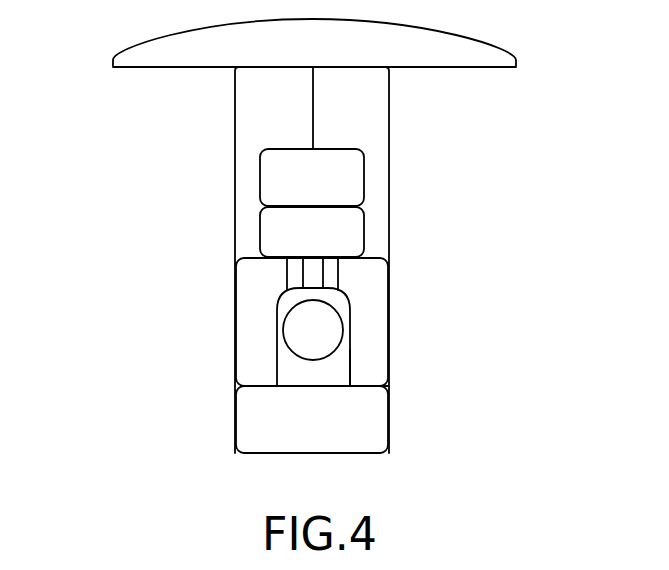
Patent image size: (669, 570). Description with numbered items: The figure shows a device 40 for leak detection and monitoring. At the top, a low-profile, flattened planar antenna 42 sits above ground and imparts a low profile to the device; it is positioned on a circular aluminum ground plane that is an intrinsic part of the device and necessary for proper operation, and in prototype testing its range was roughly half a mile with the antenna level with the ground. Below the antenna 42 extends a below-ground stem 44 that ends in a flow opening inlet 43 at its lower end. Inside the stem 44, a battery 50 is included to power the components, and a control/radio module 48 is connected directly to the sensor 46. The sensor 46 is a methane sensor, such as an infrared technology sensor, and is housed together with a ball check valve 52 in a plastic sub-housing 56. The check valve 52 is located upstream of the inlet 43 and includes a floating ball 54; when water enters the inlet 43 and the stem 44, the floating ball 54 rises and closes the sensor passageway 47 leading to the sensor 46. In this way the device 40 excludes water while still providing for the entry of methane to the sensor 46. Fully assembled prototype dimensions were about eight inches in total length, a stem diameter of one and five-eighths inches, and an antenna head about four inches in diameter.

The device 40 is at (166, 152).
The planar antenna 42 is at (497, 54).
The flow opening inlet 43 is at (389, 437).
The stem 44 is at (389, 122).
The sensor 46 is at (338, 278).
The sensor passageway 47 is at (301, 280).
The control/radio module 48 is at (364, 220).
The battery 50 is at (364, 163).
The check valve 52 is at (370, 325).
The floating ball 54 is at (287, 329).
The plastic sub-housing 56 is at (377, 368).